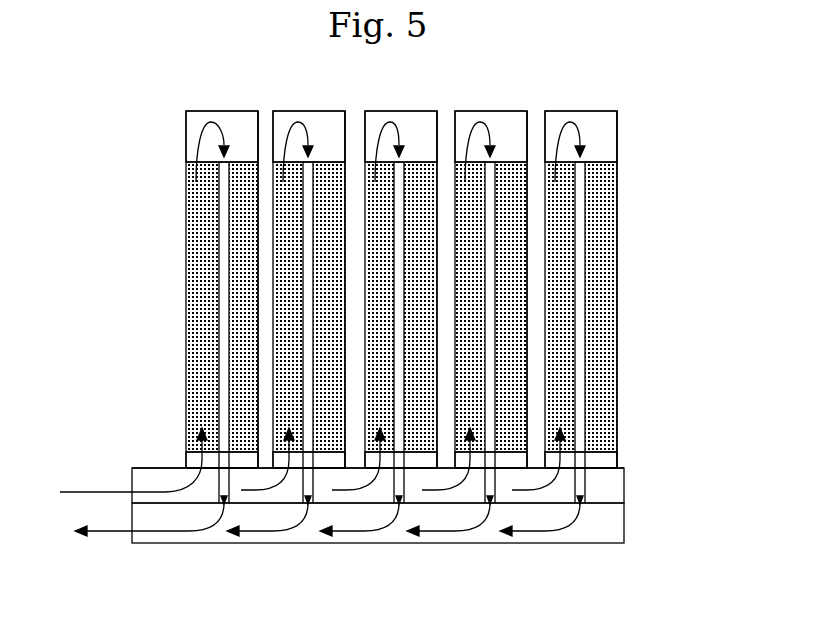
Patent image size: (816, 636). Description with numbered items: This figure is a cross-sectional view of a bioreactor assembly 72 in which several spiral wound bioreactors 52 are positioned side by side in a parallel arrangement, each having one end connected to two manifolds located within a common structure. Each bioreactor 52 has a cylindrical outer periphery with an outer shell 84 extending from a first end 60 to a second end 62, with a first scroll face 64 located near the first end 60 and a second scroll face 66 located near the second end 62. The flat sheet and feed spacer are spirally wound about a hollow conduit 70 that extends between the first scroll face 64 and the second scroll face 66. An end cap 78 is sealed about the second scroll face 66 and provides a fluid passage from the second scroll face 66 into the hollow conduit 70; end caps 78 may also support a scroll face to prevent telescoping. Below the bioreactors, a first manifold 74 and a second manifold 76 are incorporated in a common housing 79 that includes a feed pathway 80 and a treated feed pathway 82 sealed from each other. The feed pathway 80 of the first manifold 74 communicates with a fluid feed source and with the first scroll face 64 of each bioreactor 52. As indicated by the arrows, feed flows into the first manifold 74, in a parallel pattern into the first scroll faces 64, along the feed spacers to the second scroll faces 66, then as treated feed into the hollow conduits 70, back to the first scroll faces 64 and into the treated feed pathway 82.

The bioreactor 52 is at (186, 232).
The first end 60 is at (618, 467).
The second end 62 is at (620, 112).
The first scroll face 64 is at (618, 452).
The second scroll face 66 is at (618, 162).
The hollow conduit 70 is at (218, 296).
The bioreactor assembly 72 is at (215, 82).
The first manifold 74 is at (624, 488).
The second manifold 76 is at (624, 522).
The end cap 78 is at (618, 140).
The common housing 79 is at (393, 543).
The feed pathway 80 is at (147, 487).
The treated feed pathway 82 is at (190, 531).
The outer shell 84 is at (618, 322).